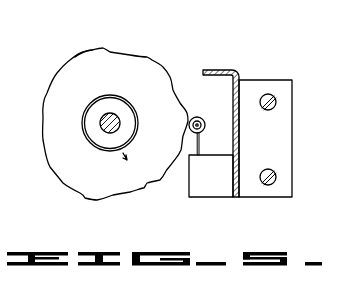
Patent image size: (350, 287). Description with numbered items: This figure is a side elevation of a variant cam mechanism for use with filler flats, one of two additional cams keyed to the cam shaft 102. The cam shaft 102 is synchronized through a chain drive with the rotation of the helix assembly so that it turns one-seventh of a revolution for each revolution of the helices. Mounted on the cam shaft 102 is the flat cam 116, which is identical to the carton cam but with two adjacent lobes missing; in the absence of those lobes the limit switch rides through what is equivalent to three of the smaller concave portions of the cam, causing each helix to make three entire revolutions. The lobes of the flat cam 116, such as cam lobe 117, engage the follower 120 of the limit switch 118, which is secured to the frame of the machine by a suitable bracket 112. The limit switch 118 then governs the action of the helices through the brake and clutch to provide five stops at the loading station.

The cam shaft 102 is at (108, 129).
The bracket 112 is at (272, 149).
The flat cam 116 is at (114, 66).
The cam lobe 117 is at (92, 48).
The limit switch 118 is at (222, 180).
The follower 120 is at (200, 117).